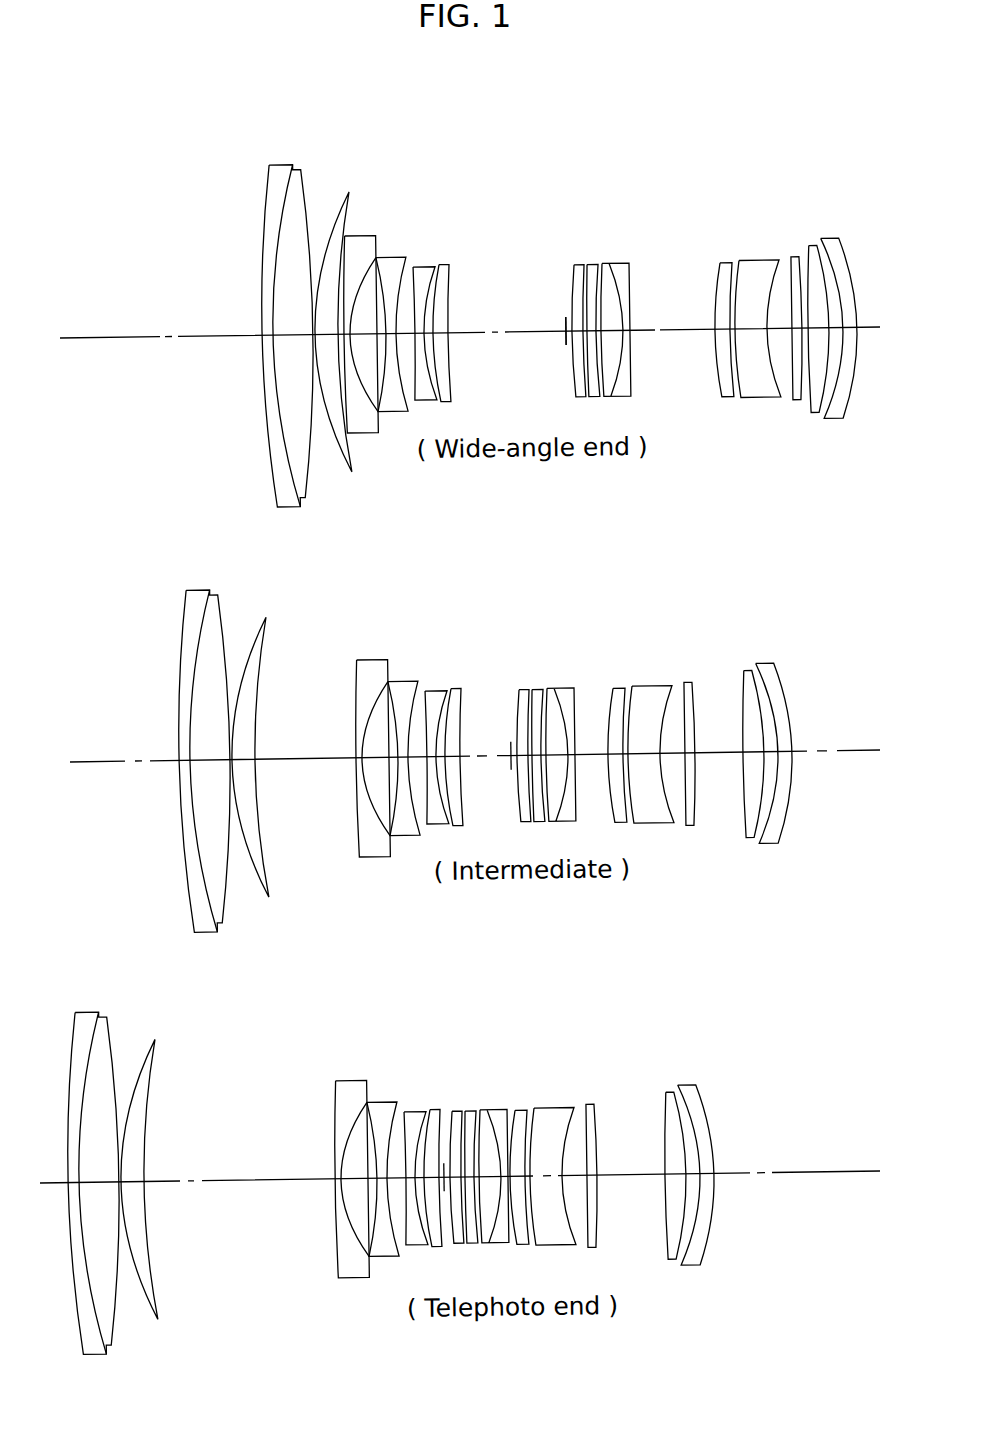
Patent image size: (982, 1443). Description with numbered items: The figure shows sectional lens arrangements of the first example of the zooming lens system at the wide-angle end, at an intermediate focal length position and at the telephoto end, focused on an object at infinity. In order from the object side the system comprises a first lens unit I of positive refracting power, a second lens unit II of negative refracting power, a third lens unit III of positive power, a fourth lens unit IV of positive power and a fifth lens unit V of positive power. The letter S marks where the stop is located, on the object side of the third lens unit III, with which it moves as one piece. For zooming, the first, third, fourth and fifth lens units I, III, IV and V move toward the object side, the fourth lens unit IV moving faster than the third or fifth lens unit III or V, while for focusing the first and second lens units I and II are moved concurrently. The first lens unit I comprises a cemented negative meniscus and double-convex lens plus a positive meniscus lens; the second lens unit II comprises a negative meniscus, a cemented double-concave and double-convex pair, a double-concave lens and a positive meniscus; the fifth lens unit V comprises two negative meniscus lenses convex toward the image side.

The first lens unit I is at (208, 730).
The second lens unit II is at (395, 691).
The third lens unit III is at (541, 672).
The fourth lens unit IV is at (655, 674).
The fifth lens unit V is at (760, 682).
The stop S is at (545, 310).